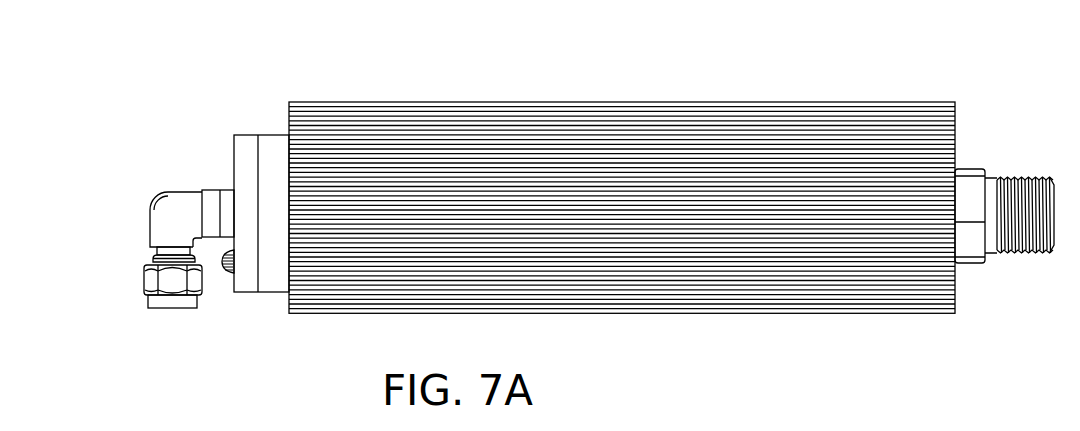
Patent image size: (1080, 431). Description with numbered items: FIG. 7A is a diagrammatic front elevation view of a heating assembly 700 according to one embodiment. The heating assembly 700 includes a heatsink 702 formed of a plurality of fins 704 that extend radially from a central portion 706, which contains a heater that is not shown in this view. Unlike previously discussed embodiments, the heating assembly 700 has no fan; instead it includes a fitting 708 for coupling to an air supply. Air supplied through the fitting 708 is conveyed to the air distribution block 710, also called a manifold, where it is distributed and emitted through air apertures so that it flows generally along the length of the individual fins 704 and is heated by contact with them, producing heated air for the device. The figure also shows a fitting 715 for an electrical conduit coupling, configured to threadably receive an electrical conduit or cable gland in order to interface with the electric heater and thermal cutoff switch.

The heating assembly 700 is at (776, 50).
The heatsink 702 is at (818, 92).
The fins 704 is at (937, 125).
The central portion 706 is at (957, 264).
The fitting 708 is at (144, 290).
The air distribution block 710 is at (243, 135).
The hex nut 715 is at (967, 168).